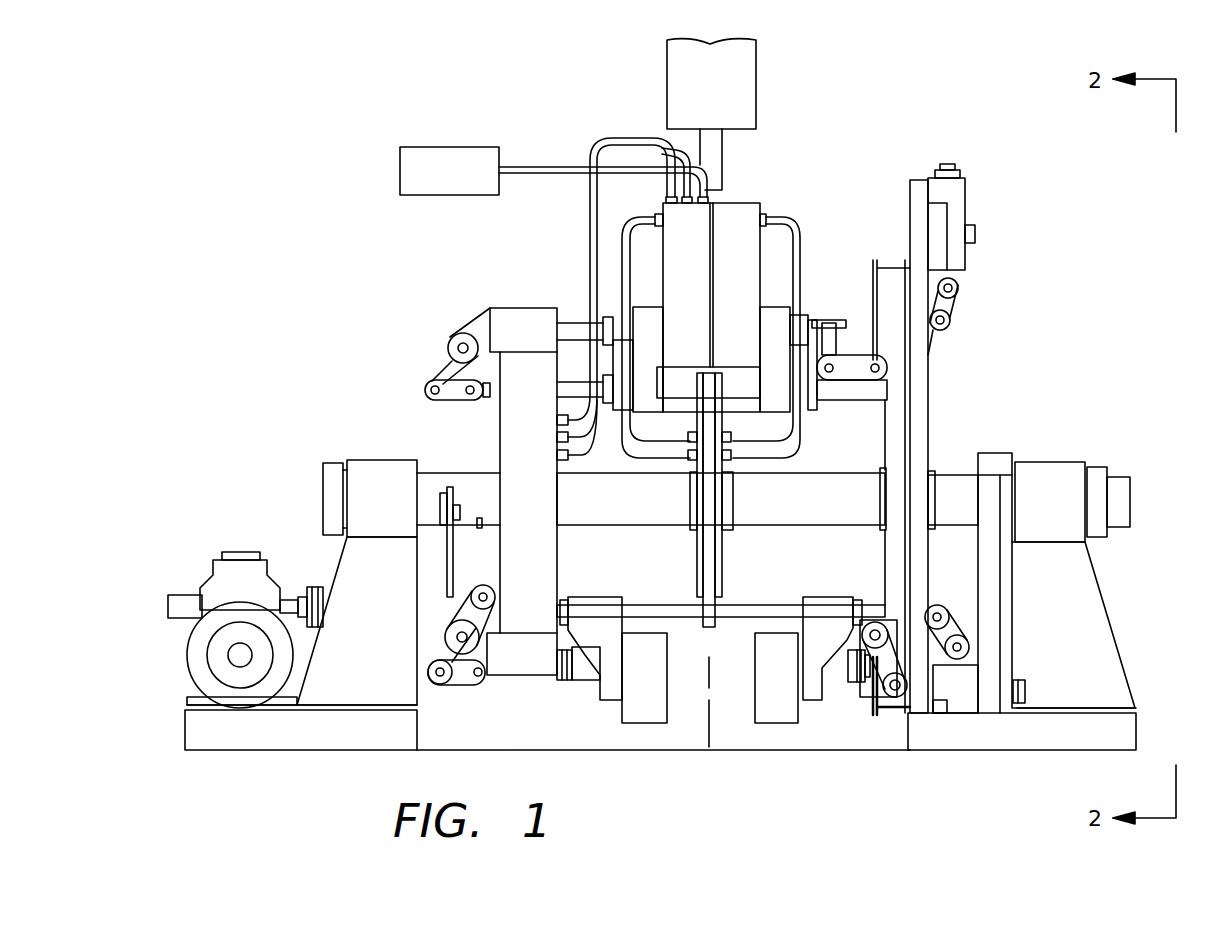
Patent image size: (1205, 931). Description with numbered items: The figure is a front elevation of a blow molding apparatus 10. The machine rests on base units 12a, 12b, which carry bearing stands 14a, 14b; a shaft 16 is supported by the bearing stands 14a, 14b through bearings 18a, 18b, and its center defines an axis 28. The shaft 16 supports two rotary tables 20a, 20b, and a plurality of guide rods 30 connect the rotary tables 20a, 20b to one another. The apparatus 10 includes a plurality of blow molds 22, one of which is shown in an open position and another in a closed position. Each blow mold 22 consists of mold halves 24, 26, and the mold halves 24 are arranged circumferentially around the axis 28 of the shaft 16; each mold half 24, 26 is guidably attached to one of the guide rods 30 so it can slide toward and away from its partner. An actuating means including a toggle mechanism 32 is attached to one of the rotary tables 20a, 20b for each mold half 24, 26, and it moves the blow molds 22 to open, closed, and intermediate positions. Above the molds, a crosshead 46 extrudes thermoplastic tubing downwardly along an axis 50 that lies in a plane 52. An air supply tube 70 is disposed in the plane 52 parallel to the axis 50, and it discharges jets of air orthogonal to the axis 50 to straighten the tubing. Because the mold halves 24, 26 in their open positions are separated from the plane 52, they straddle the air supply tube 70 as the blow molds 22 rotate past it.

The blow molding apparatus 10 is at (1045, 216).
The base unit 12a is at (256, 750).
The base unit 12b is at (977, 755).
The bearing stand 14a is at (340, 573).
The bearing stand 14b is at (1093, 568).
The shaft 16 is at (858, 474).
The bearing 18a is at (333, 460).
The bearing 18b is at (1097, 465).
The rotary table 20a is at (557, 558).
The rotary table 20b is at (883, 570).
The blow mold 22 is at (732, 203).
The mold half 24 is at (645, 725).
The mold half 26 is at (800, 716).
The axis 28 is at (333, 498).
The guide rod 30 is at (670, 605).
The toggle mechanism 32 is at (455, 684).
The crosshead 46 is at (756, 84).
The axis 50 is at (712, 735).
The plane 52 is at (712, 714).
The air supply tube 70 is at (715, 248).